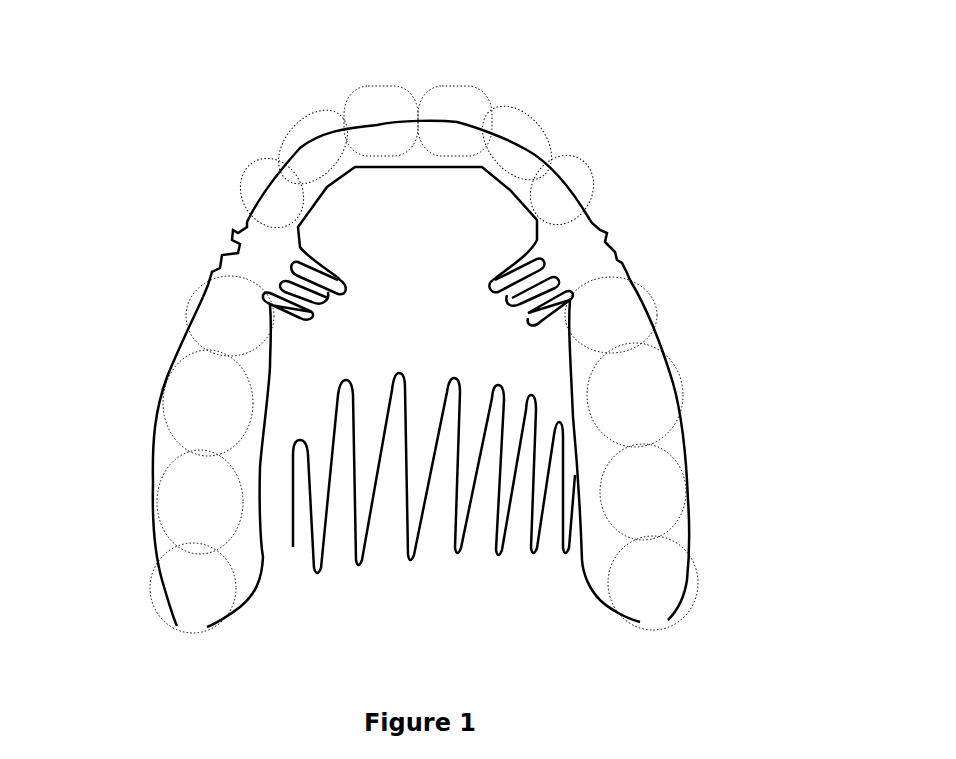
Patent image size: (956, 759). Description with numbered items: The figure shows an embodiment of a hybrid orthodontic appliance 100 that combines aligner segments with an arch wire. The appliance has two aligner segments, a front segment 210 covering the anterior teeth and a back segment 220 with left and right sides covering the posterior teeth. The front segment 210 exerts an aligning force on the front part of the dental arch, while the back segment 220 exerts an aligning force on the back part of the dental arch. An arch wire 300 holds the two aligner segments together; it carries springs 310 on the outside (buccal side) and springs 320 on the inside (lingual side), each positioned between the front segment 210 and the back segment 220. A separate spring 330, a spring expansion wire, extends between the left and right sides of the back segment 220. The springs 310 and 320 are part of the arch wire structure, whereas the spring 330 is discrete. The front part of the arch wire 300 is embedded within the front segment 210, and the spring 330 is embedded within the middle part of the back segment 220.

The hybrid orthodontic appliance 100 is at (437, 352).
The front segment 210 is at (417, 85).
The back segment 220 is at (152, 604).
The arch wire 300 is at (685, 435).
The springs (outside) 310 is at (224, 254).
The springs (inside) 320 is at (328, 293).
The spring (spring expansion wire) 330 is at (327, 555).